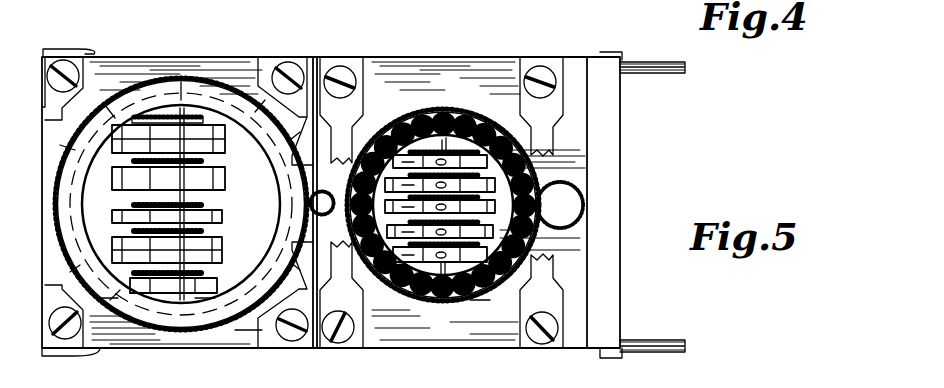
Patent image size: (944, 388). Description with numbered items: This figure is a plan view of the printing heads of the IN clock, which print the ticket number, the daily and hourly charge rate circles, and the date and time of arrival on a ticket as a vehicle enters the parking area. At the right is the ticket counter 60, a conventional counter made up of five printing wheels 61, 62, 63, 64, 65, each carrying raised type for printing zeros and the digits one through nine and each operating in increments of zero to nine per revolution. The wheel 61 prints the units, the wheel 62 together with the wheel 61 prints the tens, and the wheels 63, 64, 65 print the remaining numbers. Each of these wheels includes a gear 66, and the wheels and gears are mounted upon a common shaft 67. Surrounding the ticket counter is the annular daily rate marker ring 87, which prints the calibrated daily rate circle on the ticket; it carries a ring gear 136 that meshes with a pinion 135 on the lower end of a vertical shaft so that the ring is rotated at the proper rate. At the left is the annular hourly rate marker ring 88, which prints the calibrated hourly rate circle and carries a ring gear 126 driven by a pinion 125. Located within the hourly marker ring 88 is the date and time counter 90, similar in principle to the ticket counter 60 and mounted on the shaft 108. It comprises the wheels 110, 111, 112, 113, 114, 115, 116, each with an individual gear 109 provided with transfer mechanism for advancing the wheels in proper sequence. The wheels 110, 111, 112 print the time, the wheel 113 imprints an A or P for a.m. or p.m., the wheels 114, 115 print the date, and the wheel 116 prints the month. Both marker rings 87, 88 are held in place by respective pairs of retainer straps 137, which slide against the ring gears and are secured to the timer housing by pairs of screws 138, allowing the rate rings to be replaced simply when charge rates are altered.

The ticket counter 60 is at (447, 145).
The units wheel 61 is at (490, 164).
The tens wheel 62 is at (507, 164).
The counter wheel 63 is at (525, 238).
The counter wheel 64 is at (520, 250).
The counter wheel 65 is at (500, 284).
The gear 66 is at (428, 108).
The shaft 67 is at (443, 300).
The annular marker ring 87 is at (480, 128).
The annular marker ring 88 is at (205, 92).
The date and time counter 90 is at (254, 220).
The shaft 108 is at (172, 284).
The gears 109 is at (180, 110).
The time wheel 110 is at (222, 128).
The time wheel 111 is at (222, 150).
The time wheel 112 is at (222, 184).
The a.m./p.m. wheel 113 is at (115, 214).
The date wheel 114 is at (212, 248).
The date wheel 115 is at (108, 272).
The month wheel 116 is at (193, 284).
The pinion 125 is at (304, 202).
The ring gear 126 is at (246, 320).
The pinion 135 is at (565, 203).
The ring gear 136 is at (476, 320).
The retainer straps 137 is at (43, 62).
The screws 138 is at (67, 71).